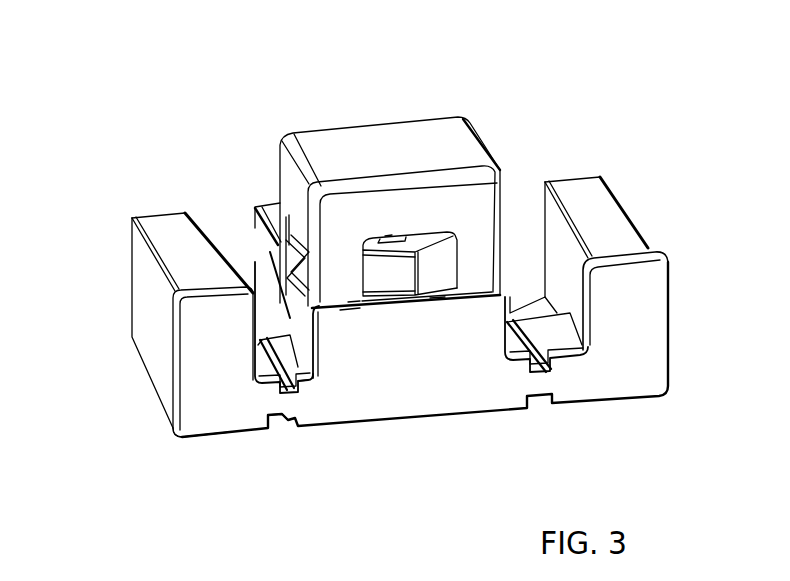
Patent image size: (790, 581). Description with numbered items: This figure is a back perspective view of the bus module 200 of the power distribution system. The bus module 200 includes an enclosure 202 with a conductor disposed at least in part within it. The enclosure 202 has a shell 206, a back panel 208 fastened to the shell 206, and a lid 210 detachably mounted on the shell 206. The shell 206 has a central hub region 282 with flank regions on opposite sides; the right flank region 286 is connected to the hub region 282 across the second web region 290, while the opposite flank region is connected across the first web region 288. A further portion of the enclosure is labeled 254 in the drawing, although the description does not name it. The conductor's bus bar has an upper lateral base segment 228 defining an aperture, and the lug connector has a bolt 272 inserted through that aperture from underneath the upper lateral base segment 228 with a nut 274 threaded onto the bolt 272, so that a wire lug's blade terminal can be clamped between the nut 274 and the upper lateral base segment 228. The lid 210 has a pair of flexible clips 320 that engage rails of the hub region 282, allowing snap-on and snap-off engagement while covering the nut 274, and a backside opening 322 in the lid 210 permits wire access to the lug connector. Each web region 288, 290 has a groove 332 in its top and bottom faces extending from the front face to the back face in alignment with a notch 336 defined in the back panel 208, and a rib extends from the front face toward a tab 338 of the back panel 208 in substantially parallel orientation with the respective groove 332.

The bus module 200 is at (283, 55).
The enclosure 202 is at (642, 244).
The shell 206 is at (137, 338).
The back panel 208 is at (198, 443).
The lid 210 is at (460, 120).
The upper lateral base segment 228 is at (435, 297).
The second end 254 is at (634, 156).
The bolt 272 is at (387, 235).
The nut 274 is at (435, 265).
The hub region 282 is at (266, 183).
The right flank region 286 is at (110, 206).
The first web region 288 is at (530, 290).
The second web region 290 is at (258, 305).
The flexible clips 320 is at (362, 278).
The backside opening 322 is at (353, 302).
The groove 332 is at (260, 342).
The notch 336 is at (278, 416).
The tab 338 is at (292, 338).